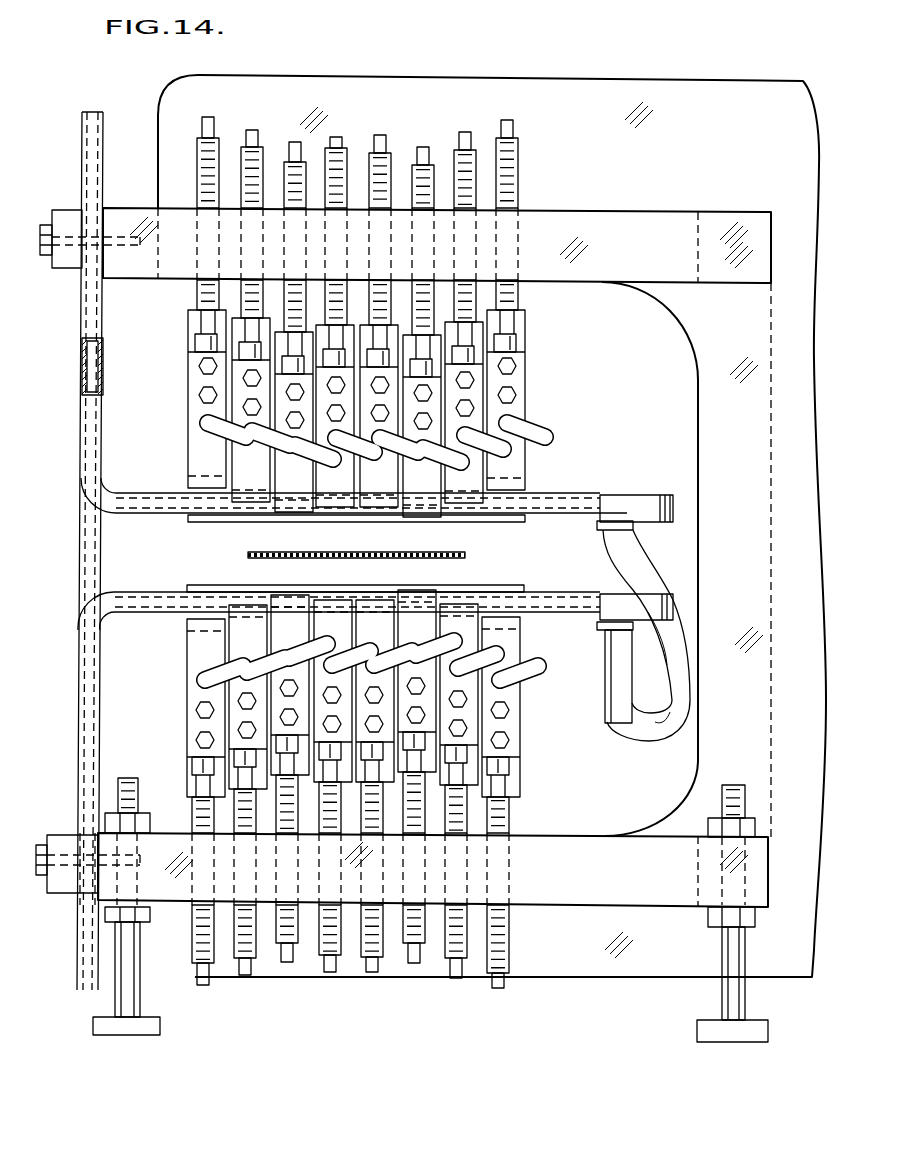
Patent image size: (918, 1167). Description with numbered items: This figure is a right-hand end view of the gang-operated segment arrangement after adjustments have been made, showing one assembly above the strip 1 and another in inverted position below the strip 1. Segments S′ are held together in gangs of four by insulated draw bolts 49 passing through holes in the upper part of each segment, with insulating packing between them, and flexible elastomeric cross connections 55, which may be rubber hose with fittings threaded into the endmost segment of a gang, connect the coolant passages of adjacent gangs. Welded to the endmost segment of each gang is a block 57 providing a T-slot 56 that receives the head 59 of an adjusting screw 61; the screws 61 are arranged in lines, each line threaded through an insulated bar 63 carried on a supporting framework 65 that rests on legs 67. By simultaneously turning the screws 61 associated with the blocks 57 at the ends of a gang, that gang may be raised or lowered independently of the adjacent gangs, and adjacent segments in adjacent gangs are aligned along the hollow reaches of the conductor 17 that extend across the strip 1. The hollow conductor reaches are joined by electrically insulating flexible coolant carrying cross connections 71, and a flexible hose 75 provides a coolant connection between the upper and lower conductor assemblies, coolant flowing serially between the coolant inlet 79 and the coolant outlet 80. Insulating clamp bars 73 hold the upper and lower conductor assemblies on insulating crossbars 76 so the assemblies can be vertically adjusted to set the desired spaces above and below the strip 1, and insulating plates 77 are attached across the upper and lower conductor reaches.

The strip 1 is at (258, 552).
The conductor 17 is at (172, 512).
The insulated draw bolts 49 is at (205, 395).
The flexible cross connections 55 is at (213, 427).
The T-slot 56 is at (200, 318).
The block 57 is at (195, 322).
The head 59 is at (203, 337).
The adjusting screw 61 is at (207, 185).
The insulated bar 63 is at (648, 225).
The supporting framework 65 is at (596, 121).
The legs 67 is at (115, 995).
The flexible coolant carrying cross connections 71 is at (655, 498).
The insulating clamp bars 73 is at (63, 218).
The flexible hose 75 is at (634, 572).
The insulating crossbars 76 is at (135, 220).
The insulating plates 77 is at (493, 593).
The coolant inlet 79 is at (608, 572).
The coolant outlet 80 is at (610, 722).